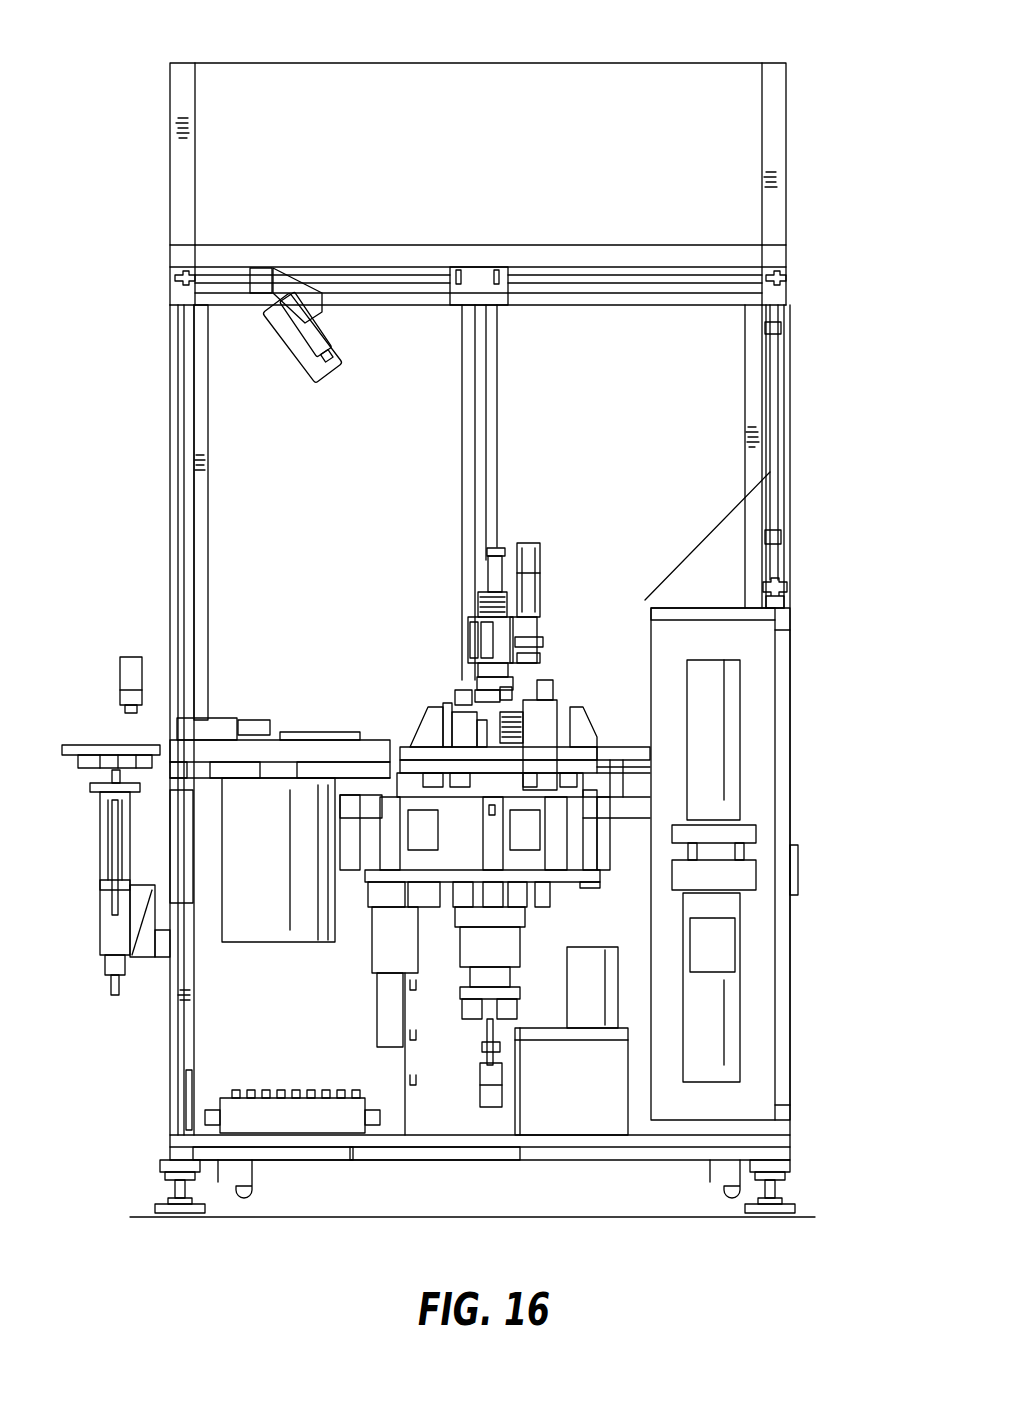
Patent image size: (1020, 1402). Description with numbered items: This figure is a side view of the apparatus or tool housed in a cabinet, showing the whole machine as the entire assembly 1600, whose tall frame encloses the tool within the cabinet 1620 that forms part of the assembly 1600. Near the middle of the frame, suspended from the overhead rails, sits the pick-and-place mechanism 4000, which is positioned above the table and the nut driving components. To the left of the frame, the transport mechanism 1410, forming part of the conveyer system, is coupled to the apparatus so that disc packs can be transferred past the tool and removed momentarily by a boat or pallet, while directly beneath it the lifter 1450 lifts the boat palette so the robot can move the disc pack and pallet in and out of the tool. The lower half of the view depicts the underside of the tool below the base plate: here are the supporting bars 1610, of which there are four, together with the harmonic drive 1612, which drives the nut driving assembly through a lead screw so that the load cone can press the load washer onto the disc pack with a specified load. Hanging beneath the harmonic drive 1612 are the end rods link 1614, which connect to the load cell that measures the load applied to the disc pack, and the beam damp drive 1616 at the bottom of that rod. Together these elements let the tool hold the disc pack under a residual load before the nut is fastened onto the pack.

The entire assembly 1600 is at (825, 118).
The cabinet 1620 is at (168, 410).
The pick and place assembly 4000 is at (425, 640).
The transport mechanism 1410 is at (92, 748).
The lifter 1450 is at (102, 858).
The supporting bars 1610 is at (590, 835).
The harmonic drive 1612 is at (543, 893).
The end rods link 1614 is at (505, 1048).
The beam damp drive 1616 is at (505, 1090).